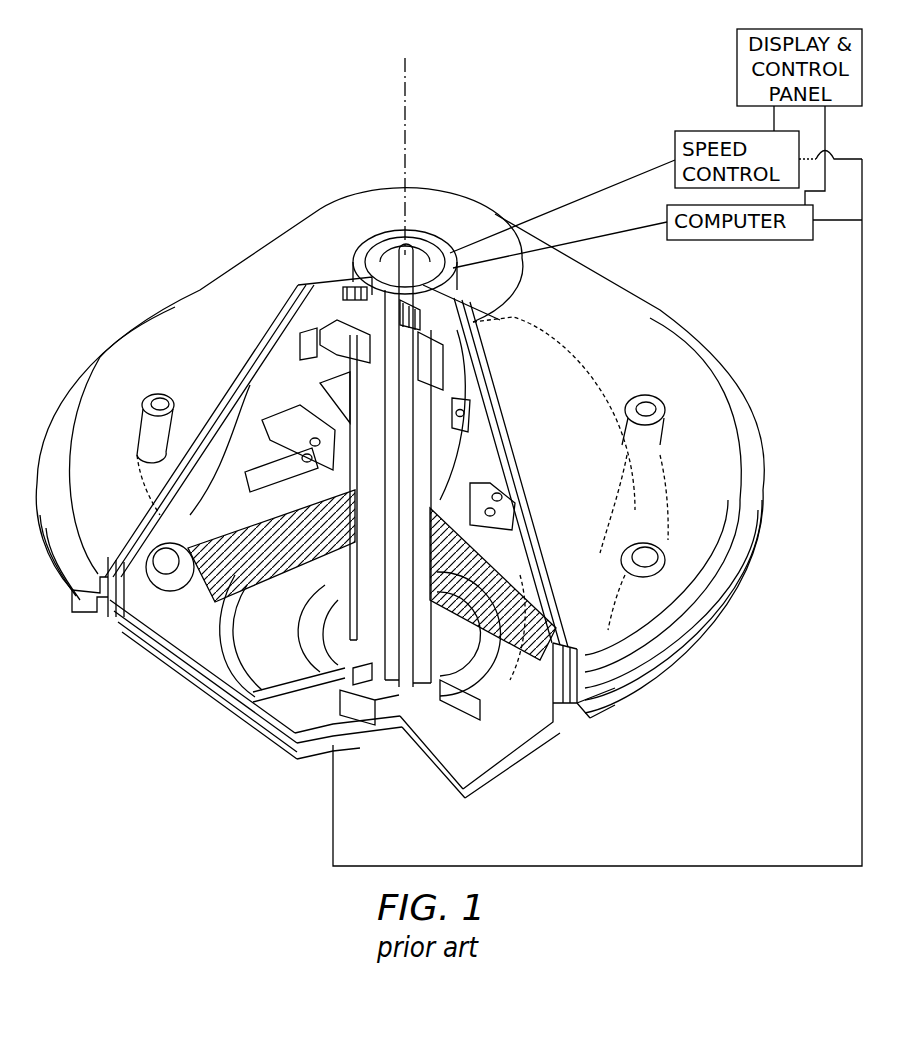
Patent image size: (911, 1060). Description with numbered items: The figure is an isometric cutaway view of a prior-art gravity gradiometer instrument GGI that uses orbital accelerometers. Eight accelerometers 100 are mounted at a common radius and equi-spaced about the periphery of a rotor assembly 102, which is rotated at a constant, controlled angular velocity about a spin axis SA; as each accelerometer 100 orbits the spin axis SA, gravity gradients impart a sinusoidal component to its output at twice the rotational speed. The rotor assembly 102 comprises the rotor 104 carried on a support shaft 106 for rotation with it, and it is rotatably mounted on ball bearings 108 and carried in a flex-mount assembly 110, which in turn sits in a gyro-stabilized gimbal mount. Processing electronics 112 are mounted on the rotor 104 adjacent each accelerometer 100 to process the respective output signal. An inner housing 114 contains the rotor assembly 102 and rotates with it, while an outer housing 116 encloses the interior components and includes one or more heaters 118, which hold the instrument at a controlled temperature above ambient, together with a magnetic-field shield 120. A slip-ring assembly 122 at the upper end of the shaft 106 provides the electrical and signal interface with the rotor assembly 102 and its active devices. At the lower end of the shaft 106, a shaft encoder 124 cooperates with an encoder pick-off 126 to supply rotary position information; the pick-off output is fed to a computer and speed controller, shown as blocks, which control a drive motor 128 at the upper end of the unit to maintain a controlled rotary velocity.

The gravity gradiometer instrument GGI is at (300, 125).
The spin axis SA is at (408, 97).
The accelerometers 100 is at (667, 403).
The rotor assembly 102 is at (247, 492).
The rotor 104 is at (218, 665).
The support shaft 106 is at (315, 622).
The ball bearings 108 is at (391, 268).
The flex-mount assembly 110 is at (520, 640).
The processing electronics 112 is at (255, 390).
The inner housing 114 is at (268, 334).
The outer housing 116 is at (213, 337).
The heaters 118 is at (652, 350).
The magnetic-field shield 120 is at (550, 729).
The slip-ring assembly 122 is at (418, 235).
The shaft encoder 124 is at (448, 765).
The encoder pick-off 126 is at (323, 745).
The drive motor 128 is at (343, 272).